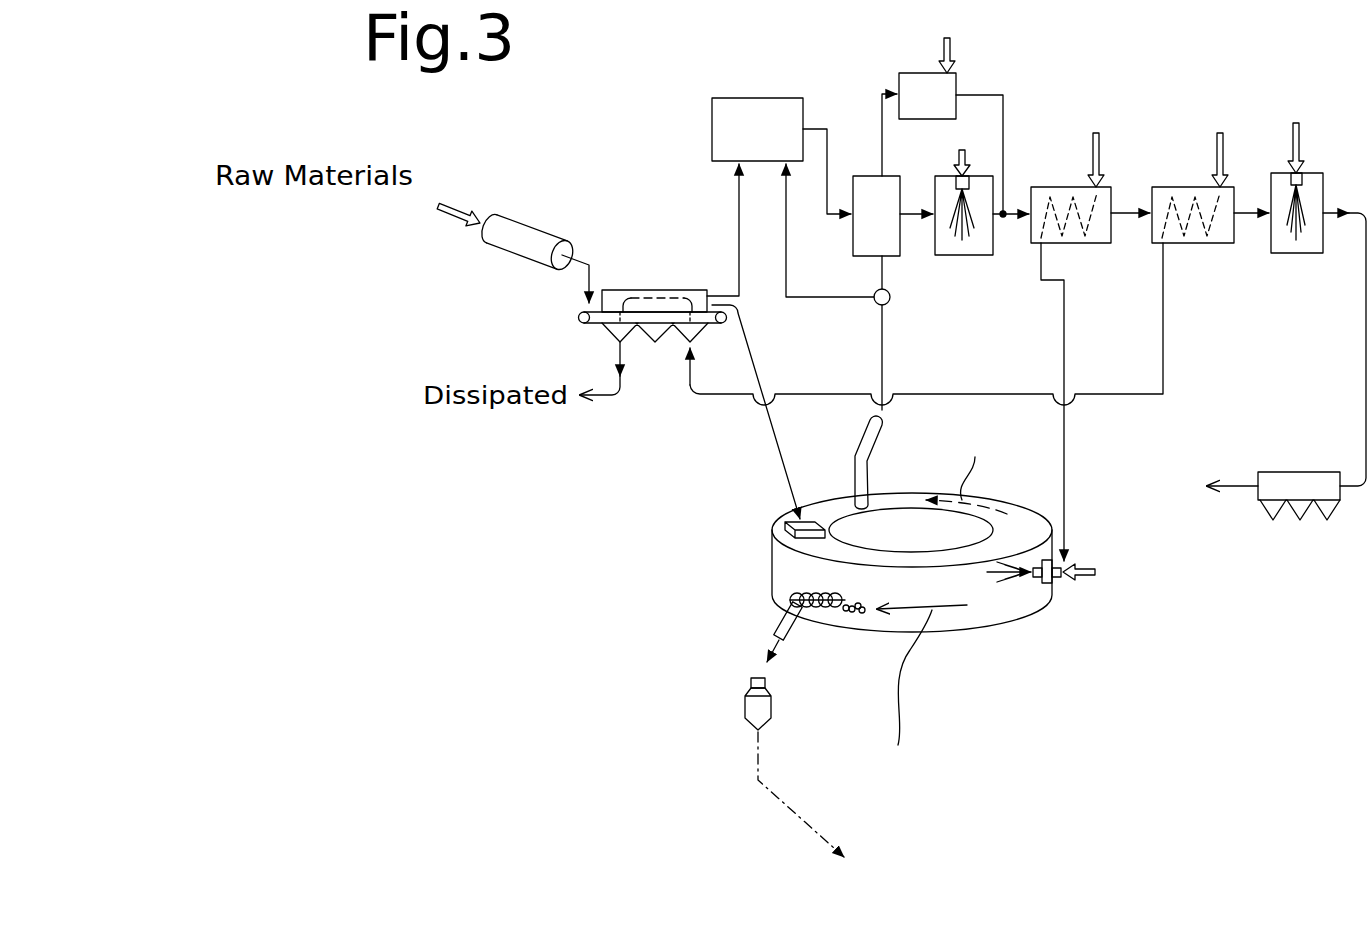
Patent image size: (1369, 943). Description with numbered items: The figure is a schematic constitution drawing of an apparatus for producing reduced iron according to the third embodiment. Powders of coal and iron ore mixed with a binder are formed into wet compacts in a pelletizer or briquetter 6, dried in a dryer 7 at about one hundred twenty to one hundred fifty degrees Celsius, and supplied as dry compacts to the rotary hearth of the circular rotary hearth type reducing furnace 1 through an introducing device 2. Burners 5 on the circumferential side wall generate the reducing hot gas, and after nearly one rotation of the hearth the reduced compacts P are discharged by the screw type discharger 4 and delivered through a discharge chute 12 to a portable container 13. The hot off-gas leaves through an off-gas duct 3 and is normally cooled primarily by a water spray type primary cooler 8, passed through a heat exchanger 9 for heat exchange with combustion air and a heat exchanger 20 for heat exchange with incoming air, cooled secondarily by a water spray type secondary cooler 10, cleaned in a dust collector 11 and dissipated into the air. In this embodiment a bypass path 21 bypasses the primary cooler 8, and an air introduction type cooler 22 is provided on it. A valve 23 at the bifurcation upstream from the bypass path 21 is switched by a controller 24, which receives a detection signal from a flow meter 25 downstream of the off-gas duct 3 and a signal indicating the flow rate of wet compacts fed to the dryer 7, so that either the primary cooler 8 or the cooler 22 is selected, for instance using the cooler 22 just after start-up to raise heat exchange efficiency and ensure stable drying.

The rotary hearth type reducing furnace 1 is at (1014, 629).
The introducing device 2 is at (783, 530).
The off-gas duct 3 is at (860, 440).
The screw type discharger 4 is at (820, 610).
The burner 5 is at (1053, 583).
The pelletizer or briquetter 6 is at (545, 222).
The dryer 7 is at (661, 290).
The primary cooler 8 is at (980, 255).
The heat exchanger 9 is at (1100, 243).
The secondary cooler 10 is at (1310, 253).
The dust collector 11 is at (1306, 472).
The discharge chute 12 is at (783, 613).
The portable container 13 is at (745, 705).
The heat exchanger 20 is at (1220, 243).
The bypass path 21 is at (882, 145).
The air introduction type cooler 22 is at (899, 80).
The valve 23 is at (900, 243).
The controller 24 is at (712, 122).
The flow meter 25 is at (876, 303).
The reduced compacts P is at (853, 614).